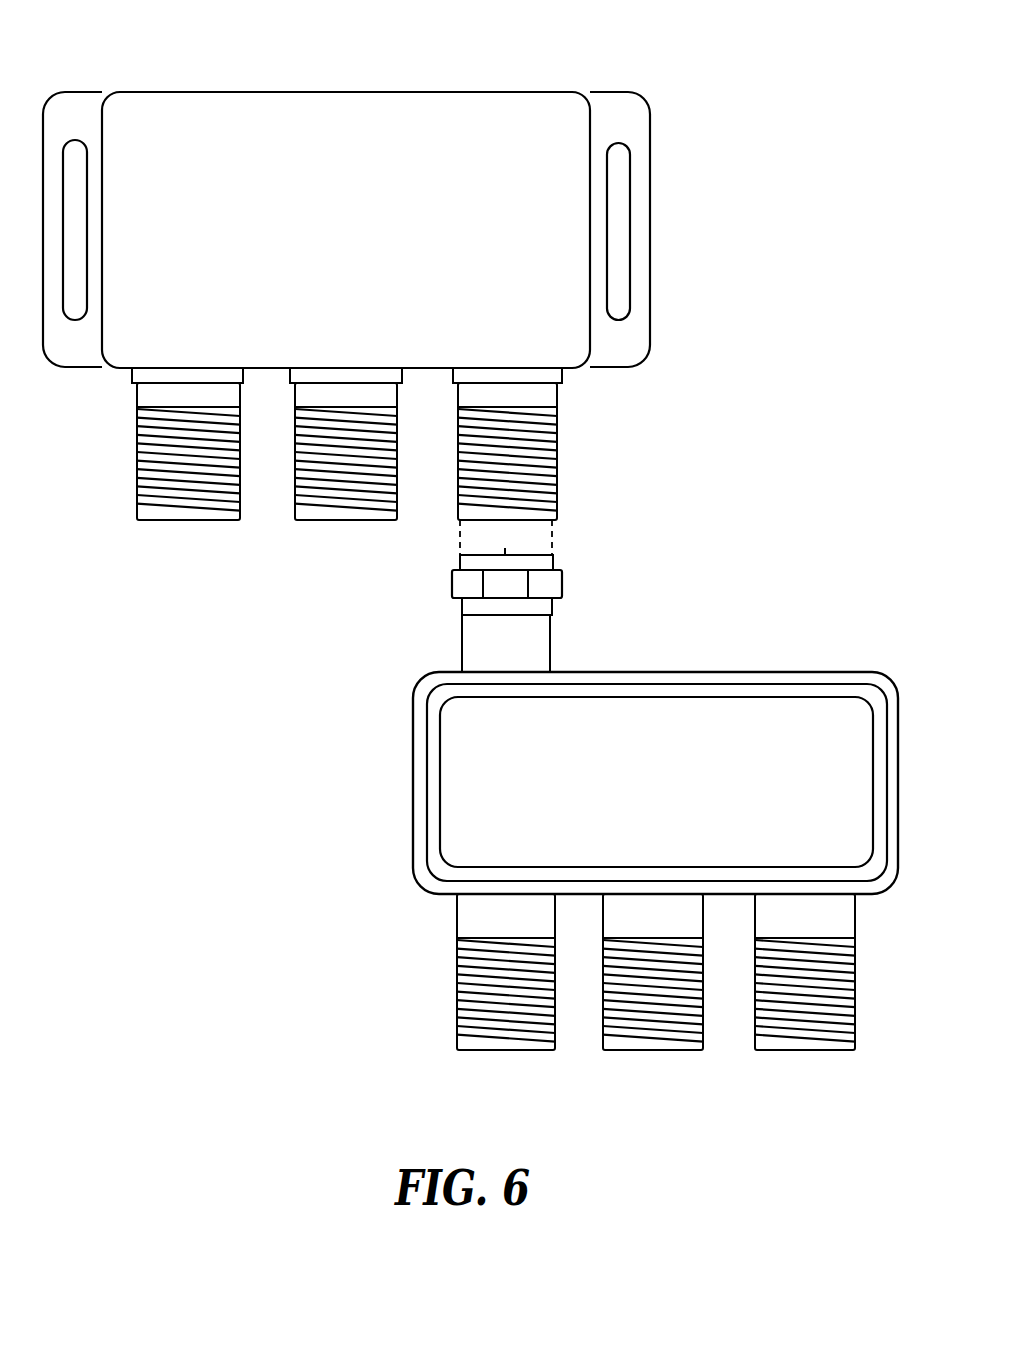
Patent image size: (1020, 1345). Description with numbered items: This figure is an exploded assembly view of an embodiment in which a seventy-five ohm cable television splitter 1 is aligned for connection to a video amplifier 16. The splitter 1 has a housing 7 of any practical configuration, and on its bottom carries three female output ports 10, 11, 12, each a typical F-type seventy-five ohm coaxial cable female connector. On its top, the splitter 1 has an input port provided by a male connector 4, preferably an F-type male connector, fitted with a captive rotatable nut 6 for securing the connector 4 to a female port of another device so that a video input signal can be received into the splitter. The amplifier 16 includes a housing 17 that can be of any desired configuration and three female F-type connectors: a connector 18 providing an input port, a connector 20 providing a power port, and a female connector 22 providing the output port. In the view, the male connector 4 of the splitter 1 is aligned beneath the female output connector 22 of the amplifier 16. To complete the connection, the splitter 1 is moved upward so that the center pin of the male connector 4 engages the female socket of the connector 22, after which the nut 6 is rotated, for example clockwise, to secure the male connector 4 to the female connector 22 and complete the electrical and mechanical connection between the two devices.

The splitter 1 is at (656, 737).
The male connector 4 is at (448, 564).
The captive rotatable nut 6 is at (462, 586).
The housing 7 is at (747, 670).
The female output port 10 is at (462, 912).
The female output port 11 is at (653, 1045).
The female output port 12 is at (852, 930).
The amplifier 16 is at (447, 80).
The housing 17 is at (650, 178).
The connector 18 is at (143, 395).
The connector 20 is at (398, 395).
The female connector 22 is at (548, 397).